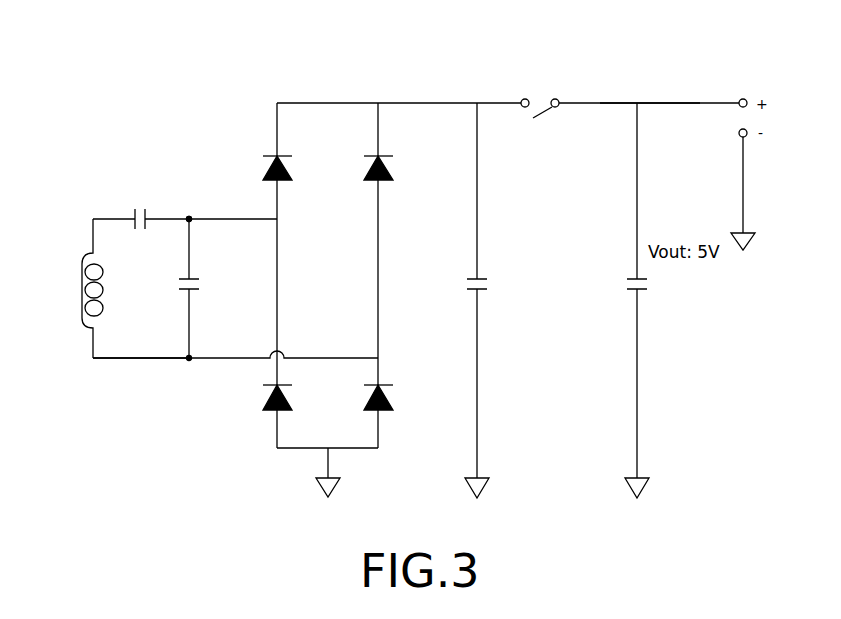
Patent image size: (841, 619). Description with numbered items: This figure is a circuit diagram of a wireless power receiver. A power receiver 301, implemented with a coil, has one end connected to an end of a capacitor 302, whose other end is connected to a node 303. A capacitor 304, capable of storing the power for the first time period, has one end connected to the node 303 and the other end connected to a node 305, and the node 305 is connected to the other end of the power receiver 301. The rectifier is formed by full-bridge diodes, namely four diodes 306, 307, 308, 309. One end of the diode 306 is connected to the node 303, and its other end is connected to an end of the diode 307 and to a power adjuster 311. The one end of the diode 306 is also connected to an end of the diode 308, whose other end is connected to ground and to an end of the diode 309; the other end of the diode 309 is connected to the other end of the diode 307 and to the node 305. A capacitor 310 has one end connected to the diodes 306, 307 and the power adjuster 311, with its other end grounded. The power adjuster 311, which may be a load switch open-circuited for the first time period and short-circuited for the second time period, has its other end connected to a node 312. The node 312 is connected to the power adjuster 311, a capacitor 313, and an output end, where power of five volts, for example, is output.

The power receiver 301 is at (80, 293).
The capacitor 302 is at (137, 205).
The node 303 is at (189, 212).
The capacitor 304 is at (203, 286).
The node 305 is at (95, 365).
The diode 306 is at (293, 170).
The diode 307 is at (394, 170).
The diode 308 is at (293, 399).
The diode 309 is at (394, 399).
The capacitor 310 is at (490, 283).
The power adjuster 311 is at (537, 59).
The node 312 is at (636, 97).
The capacitor 313 is at (656, 283).